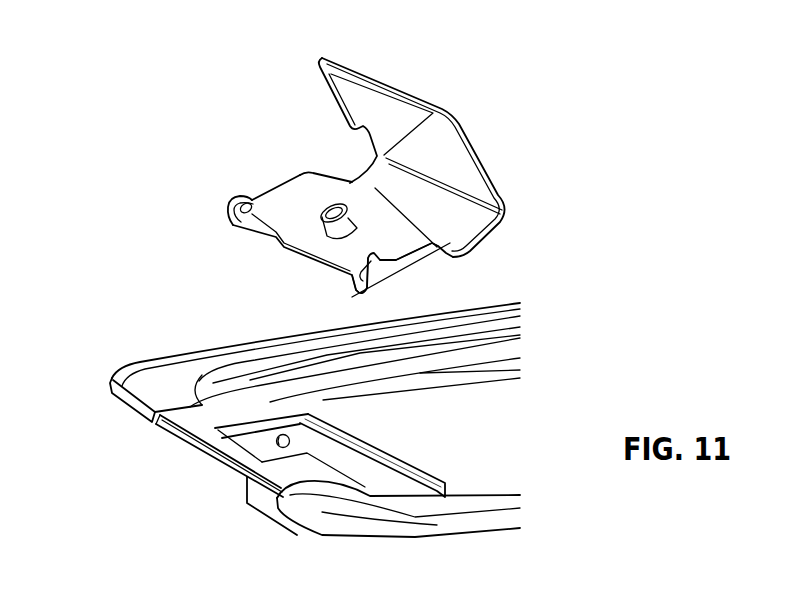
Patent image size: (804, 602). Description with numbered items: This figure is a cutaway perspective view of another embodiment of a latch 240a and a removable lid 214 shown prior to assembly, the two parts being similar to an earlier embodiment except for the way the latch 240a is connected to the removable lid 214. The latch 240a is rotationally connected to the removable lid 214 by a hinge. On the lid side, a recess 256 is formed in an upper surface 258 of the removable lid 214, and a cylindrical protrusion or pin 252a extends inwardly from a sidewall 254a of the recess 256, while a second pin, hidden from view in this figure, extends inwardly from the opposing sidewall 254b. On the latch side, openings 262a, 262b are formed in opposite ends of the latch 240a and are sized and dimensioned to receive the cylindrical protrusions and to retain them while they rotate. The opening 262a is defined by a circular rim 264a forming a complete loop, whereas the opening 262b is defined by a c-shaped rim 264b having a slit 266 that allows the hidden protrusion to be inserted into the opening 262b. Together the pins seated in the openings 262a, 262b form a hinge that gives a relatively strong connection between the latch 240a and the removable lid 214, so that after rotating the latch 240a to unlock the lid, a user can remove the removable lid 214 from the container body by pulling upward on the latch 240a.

The latch 240a is at (410, 58).
The opening 262a is at (247, 202).
The circular rim 264a is at (233, 197).
The opening 262b is at (356, 277).
The c-shaped rim 264b is at (357, 296).
The slit 266 is at (370, 255).
The removable lid 214 is at (183, 352).
The upper surface 258 is at (110, 376).
The sidewall 254a is at (272, 445).
The cylindrical protrusion 252a is at (291, 438).
The recess 256 is at (358, 474).
The sidewall 254b is at (403, 492).